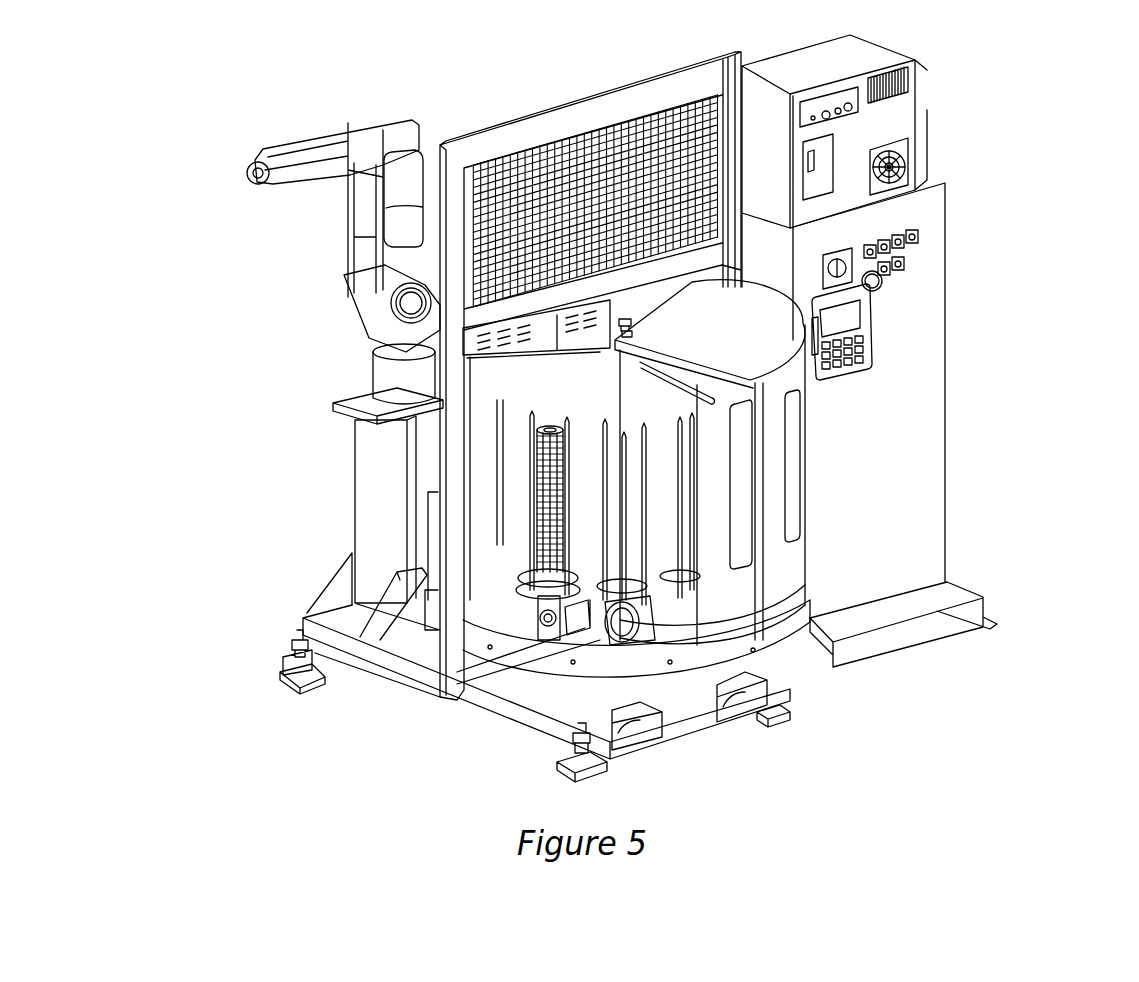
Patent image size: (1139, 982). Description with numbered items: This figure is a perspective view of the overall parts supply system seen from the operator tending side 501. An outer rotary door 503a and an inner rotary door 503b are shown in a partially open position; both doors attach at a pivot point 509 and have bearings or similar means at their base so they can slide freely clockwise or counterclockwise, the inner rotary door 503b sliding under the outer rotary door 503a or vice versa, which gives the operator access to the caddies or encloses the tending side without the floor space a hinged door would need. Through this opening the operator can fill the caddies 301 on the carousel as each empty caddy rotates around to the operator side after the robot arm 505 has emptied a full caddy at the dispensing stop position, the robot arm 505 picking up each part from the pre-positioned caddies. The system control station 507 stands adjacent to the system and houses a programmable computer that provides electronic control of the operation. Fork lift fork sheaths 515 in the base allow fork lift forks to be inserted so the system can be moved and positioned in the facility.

The caddies 301 is at (305, 617).
The operator tending side 501 is at (418, 712).
The outer rotary door 503a is at (866, 350).
The inner rotary door 503b is at (725, 597).
The robot arm 505 is at (303, 175).
The system control station 507 is at (905, 128).
The pivot point 509 is at (630, 335).
The fork lift fork sheaths 515 is at (650, 742).